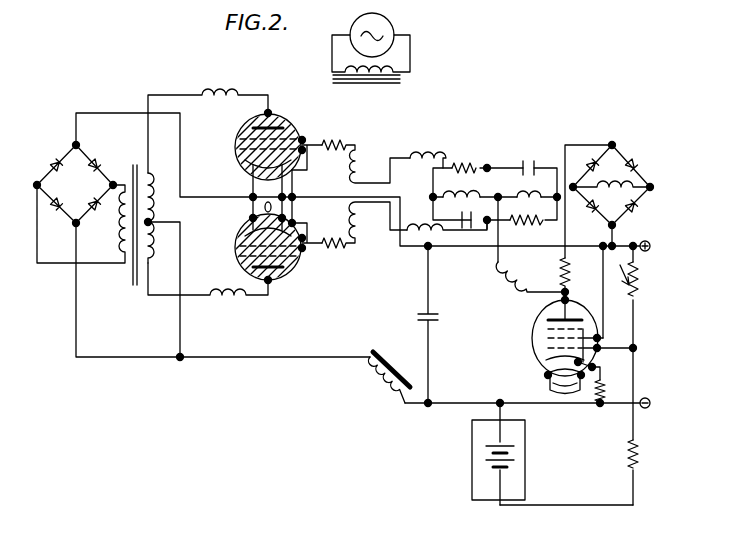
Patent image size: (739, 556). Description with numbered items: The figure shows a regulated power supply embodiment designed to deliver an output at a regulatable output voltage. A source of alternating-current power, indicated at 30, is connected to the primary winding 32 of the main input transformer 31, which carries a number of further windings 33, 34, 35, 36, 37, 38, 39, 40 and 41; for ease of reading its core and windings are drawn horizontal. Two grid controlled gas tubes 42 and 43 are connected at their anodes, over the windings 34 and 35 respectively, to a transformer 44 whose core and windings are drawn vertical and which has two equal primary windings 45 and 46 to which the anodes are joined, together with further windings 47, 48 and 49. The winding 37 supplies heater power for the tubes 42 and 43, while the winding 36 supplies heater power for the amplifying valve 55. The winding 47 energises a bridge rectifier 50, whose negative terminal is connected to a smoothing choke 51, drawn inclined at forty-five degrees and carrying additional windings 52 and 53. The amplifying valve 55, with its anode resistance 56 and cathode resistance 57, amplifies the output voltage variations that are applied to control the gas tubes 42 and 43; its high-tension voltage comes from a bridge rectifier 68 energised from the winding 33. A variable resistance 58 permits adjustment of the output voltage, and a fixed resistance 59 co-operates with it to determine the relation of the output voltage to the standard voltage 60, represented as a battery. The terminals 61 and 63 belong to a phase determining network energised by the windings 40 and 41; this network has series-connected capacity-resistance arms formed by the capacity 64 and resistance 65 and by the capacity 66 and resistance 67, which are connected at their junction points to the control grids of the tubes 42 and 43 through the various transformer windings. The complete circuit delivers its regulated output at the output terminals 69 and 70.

The oscillator 30 is at (385, 31).
The main input transformer 31 is at (382, 84).
The primary winding 32 is at (387, 53).
The winding 33 is at (611, 198).
The winding 34 is at (208, 120).
The winding 35 is at (208, 298).
The winding 36 is at (565, 392).
The winding 37 is at (252, 203).
The winding 38 is at (428, 147).
The winding 39 is at (418, 229).
The winding 40 is at (433, 195).
The winding 41 is at (545, 190).
The grid controlled gas tube 42 is at (268, 164).
The grid controlled gas tube 43 is at (268, 242).
The transformer 44 is at (120, 217).
The primary winding 45 is at (161, 184).
The primary winding 46 is at (160, 257).
The winding 47 is at (81, 224).
The winding 48 is at (366, 162).
The winding 49 is at (364, 225).
The bridge rectifier 50 is at (75, 184).
The smoothing choke 51 is at (374, 352).
The additional winding 52 is at (382, 383).
The additional winding 53 is at (522, 285).
The amplifying valve 55 is at (532, 333).
The anode resistance 56 is at (578, 279).
The cathode resistance 57 is at (612, 388).
The variable resistance 58 is at (643, 280).
The fixed resistance 59 is at (647, 454).
The standard voltage 60 is at (479, 454).
The terminal of phase determining network 61 is at (495, 189).
The terminal of phase determining network 63 is at (498, 197).
The capacity 64 is at (531, 157).
The resistance 65 is at (452, 170).
The capacity 66 is at (456, 228).
The resistance 67 is at (526, 232).
The bridge rectifier 68 is at (608, 160).
The output terminal 69 is at (651, 231).
The output terminal 70 is at (653, 391).